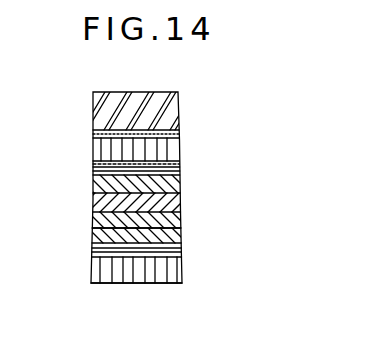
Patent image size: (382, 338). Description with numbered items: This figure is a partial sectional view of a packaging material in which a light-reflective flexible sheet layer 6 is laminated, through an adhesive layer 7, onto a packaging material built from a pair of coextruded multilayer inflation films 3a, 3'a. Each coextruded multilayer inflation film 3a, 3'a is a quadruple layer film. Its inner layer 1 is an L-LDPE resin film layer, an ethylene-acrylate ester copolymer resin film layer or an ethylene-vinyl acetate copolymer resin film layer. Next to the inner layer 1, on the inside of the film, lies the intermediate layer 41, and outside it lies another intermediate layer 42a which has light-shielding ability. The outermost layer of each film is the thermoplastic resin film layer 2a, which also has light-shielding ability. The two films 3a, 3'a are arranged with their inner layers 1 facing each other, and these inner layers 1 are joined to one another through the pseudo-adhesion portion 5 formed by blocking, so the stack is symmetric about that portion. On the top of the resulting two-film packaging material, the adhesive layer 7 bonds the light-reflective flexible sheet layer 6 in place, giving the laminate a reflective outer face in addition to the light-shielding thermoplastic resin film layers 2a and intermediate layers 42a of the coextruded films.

The inner layer 1 is at (180, 200).
The thermoplastic resin film layer 2a is at (180, 142).
The coextruded multilayer inflation film 3a is at (252, 113).
The coextruded multilayer inflation film 3'a is at (195, 248).
The pseudo-adhesion portion 5 is at (95, 208).
The light-reflective flexible sheet layer 6 is at (92, 110).
The adhesive layer 7 is at (93, 139).
The intermediate layer 41 is at (183, 182).
The intermediate layer 42a is at (182, 165).